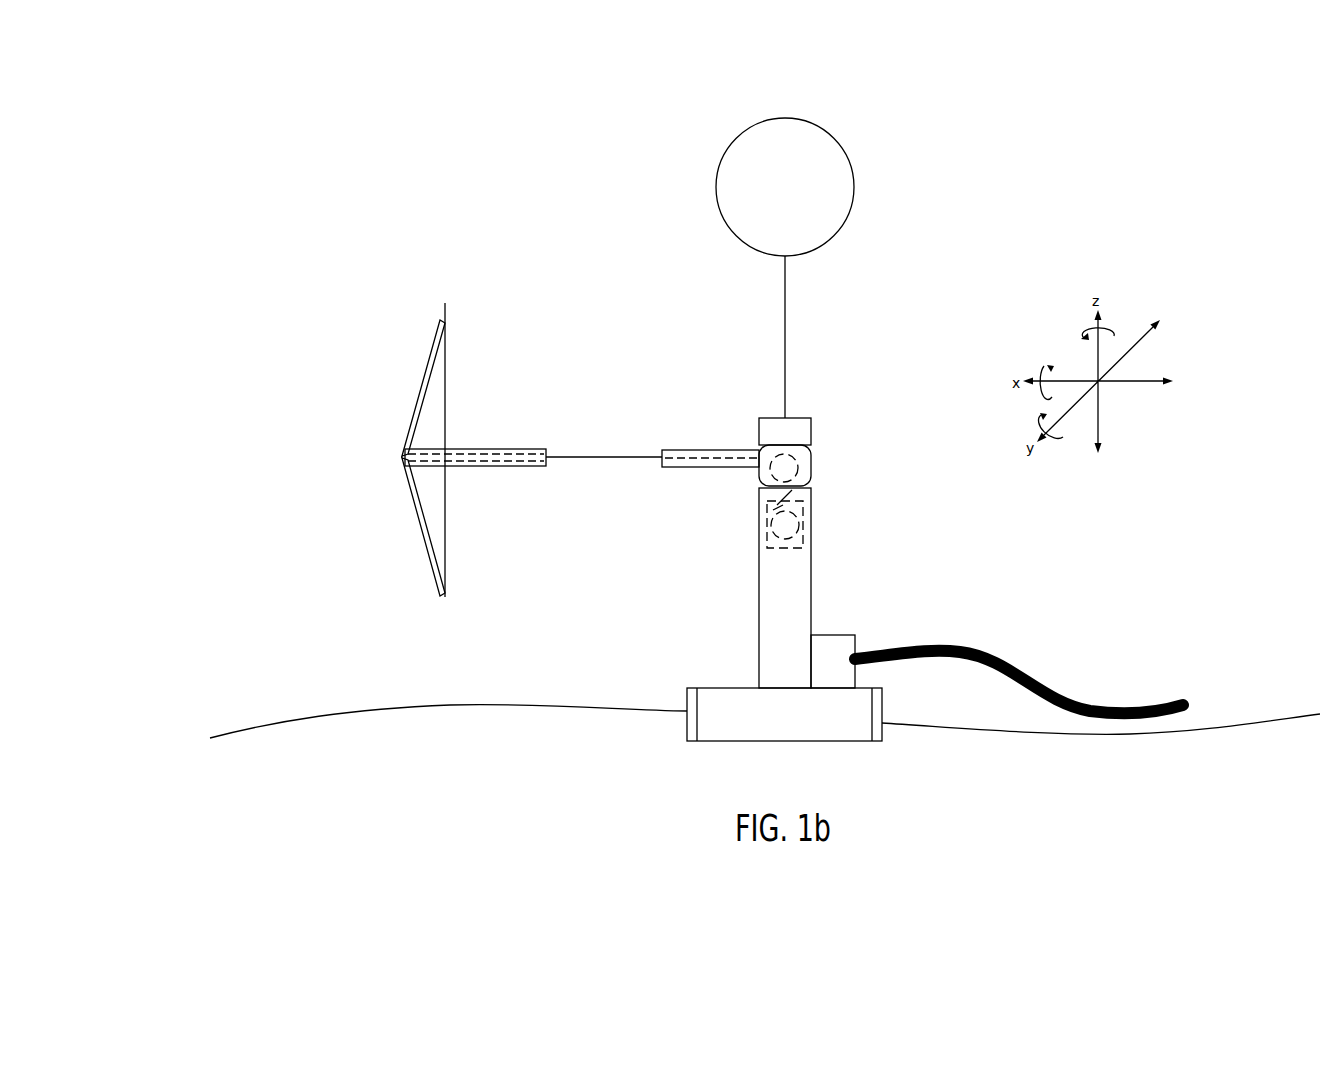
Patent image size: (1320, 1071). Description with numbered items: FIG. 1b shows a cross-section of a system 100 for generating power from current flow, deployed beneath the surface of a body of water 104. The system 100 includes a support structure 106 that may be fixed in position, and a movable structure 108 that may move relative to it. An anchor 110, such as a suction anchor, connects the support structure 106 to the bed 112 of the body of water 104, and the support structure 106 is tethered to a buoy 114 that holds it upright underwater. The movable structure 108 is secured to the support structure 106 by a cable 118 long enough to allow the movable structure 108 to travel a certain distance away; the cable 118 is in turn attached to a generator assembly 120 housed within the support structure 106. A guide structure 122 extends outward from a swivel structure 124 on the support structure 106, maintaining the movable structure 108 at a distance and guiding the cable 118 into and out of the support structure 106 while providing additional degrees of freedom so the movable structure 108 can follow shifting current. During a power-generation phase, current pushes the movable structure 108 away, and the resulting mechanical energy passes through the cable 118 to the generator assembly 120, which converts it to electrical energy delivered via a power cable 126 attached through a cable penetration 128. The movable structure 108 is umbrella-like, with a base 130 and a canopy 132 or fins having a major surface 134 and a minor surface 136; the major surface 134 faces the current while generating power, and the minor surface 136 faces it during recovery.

The system 100 is at (613, 63).
The body of water 104 is at (480, 245).
The support structure 106 is at (767, 579).
The movable structure 108 is at (452, 445).
The anchor 110 is at (730, 687).
The bed 112 is at (562, 707).
The buoy 114 is at (786, 117).
The cable 118 is at (612, 452).
The generator assembly 120 is at (817, 517).
The guide structure 122 is at (720, 447).
The swivel structure 124 is at (831, 442).
The power cable 126 is at (973, 647).
The cable penetration 128 is at (830, 635).
The base 130 is at (483, 468).
The canopy 132 is at (405, 380).
The major surface 134 is at (425, 393).
The minor surface 136 is at (445, 312).